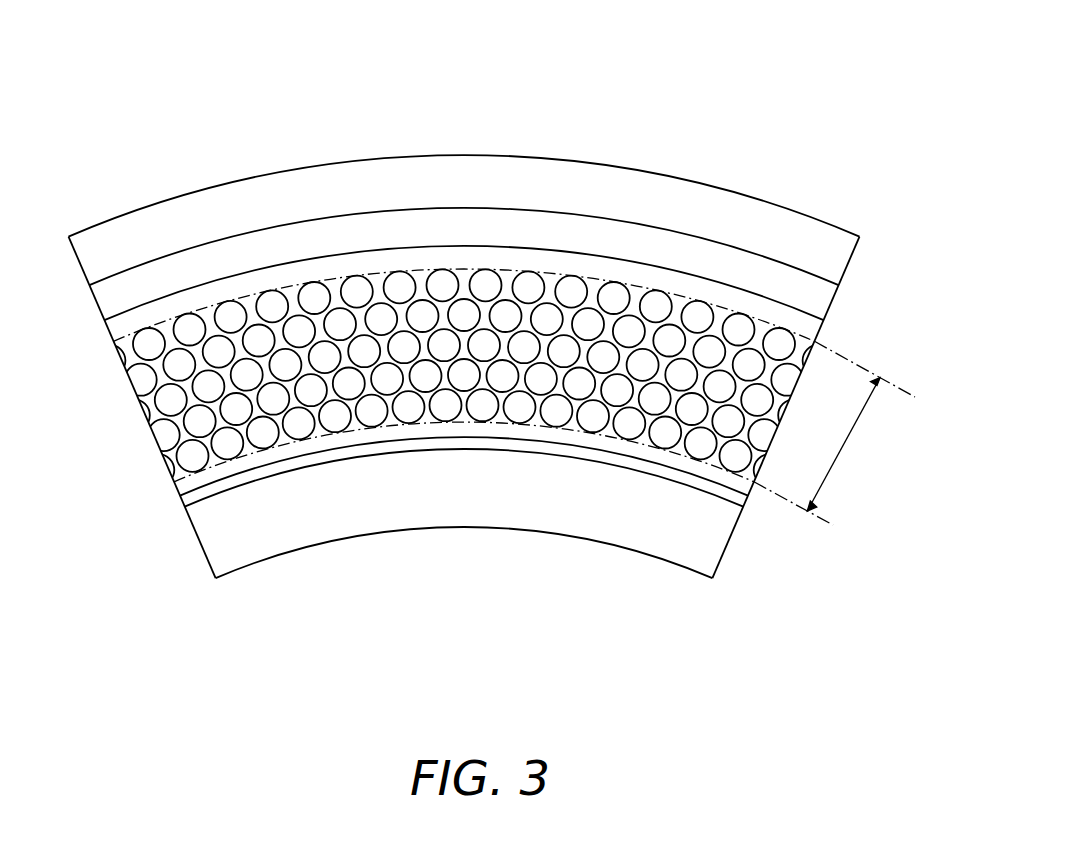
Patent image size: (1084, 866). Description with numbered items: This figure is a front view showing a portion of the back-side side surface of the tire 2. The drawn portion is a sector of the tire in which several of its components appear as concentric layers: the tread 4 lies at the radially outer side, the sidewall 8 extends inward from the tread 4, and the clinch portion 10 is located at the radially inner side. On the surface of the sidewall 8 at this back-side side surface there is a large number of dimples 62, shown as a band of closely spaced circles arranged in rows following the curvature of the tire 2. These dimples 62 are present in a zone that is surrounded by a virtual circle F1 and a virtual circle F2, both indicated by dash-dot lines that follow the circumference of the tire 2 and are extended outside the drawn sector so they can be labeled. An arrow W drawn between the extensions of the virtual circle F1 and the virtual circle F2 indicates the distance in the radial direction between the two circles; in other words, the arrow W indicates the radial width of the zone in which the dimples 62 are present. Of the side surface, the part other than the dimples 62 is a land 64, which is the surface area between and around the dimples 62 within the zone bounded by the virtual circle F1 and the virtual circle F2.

The tire 2 is at (835, 30).
The tread 4 is at (541, 155).
The sidewall 8 is at (437, 257).
The clinch portion 10 is at (580, 498).
The dimples 62 is at (363, 350).
The land 64 is at (317, 322).
The virtual circle F1 is at (782, 497).
The virtual circle F2 is at (847, 350).
The arrow W is at (843, 444).